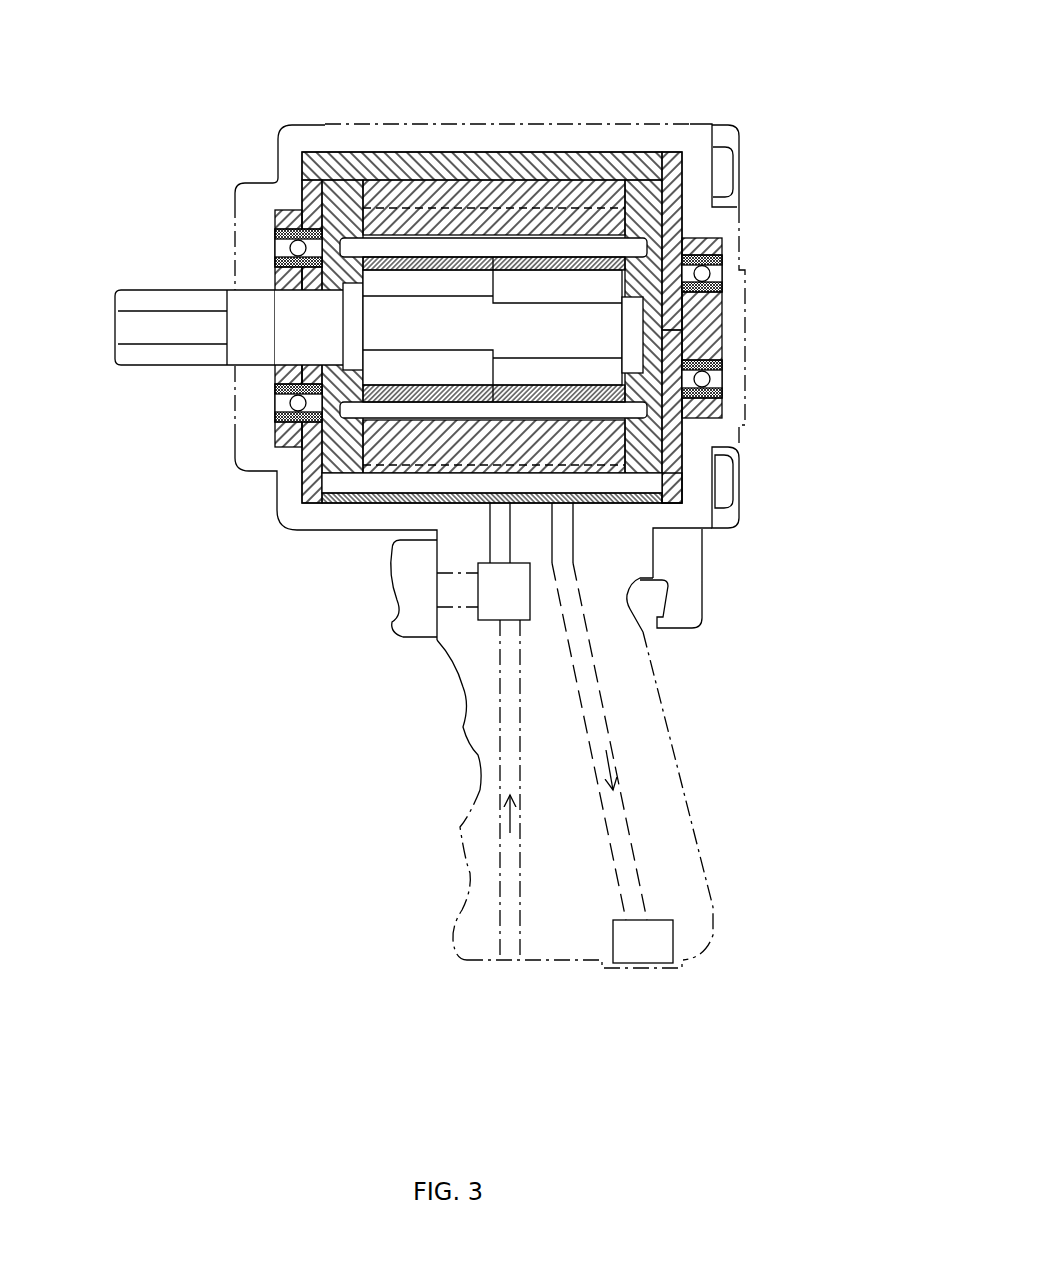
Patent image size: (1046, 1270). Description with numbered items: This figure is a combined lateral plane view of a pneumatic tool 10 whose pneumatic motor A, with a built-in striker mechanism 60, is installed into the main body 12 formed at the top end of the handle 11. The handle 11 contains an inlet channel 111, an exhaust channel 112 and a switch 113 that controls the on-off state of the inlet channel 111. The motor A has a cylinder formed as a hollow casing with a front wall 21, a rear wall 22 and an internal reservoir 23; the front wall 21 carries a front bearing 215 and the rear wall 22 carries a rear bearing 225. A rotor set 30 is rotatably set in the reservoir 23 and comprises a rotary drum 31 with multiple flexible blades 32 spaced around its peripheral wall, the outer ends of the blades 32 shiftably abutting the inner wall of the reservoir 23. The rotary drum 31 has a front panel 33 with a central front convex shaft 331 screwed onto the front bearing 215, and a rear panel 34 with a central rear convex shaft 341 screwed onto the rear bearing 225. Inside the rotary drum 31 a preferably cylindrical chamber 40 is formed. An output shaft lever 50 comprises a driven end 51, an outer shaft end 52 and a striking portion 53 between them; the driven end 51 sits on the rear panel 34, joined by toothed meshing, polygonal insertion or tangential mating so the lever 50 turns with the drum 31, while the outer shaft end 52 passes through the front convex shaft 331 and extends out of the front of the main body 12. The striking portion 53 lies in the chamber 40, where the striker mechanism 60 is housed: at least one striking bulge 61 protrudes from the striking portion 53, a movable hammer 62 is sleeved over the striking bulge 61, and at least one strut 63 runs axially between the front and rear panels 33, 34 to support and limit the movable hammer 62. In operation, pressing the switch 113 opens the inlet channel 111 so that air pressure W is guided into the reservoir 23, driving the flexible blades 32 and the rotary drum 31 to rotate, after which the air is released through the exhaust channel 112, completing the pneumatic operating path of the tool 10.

The pneumatic tool 10 is at (370, 917).
The handle 11 is at (475, 755).
The inlet channel 111 is at (500, 686).
The exhaust channel 112 is at (612, 720).
The switch 113 is at (402, 641).
The main body 12 is at (363, 122).
The front wall 21 is at (300, 177).
The front bearing 215 is at (280, 249).
The rear wall 22 is at (683, 455).
The rear bearing 225 is at (712, 378).
The reservoir 23 is at (592, 187).
The rotor set 30 is at (338, 477).
The rotary drum 31 is at (391, 480).
The flexible blades 32 is at (683, 482).
The front panel 33 is at (290, 456).
The front convex shaft 331 is at (278, 378).
The rear panel 34 is at (650, 227).
The rear convex shaft 341 is at (690, 315).
The chamber 40 is at (462, 398).
The output shaft lever 50 is at (273, 348).
The driven end 51 is at (637, 333).
The outer shaft end 52 is at (160, 294).
The striking portion 53 is at (427, 295).
The built-in striker mechanism 60 is at (466, 60).
The striking bulge 61 is at (500, 256).
The movable hammer 62 is at (460, 360).
The strut 63 is at (513, 277).
The pneumatic motor A is at (693, 146).
The air pressure W is at (505, 814).